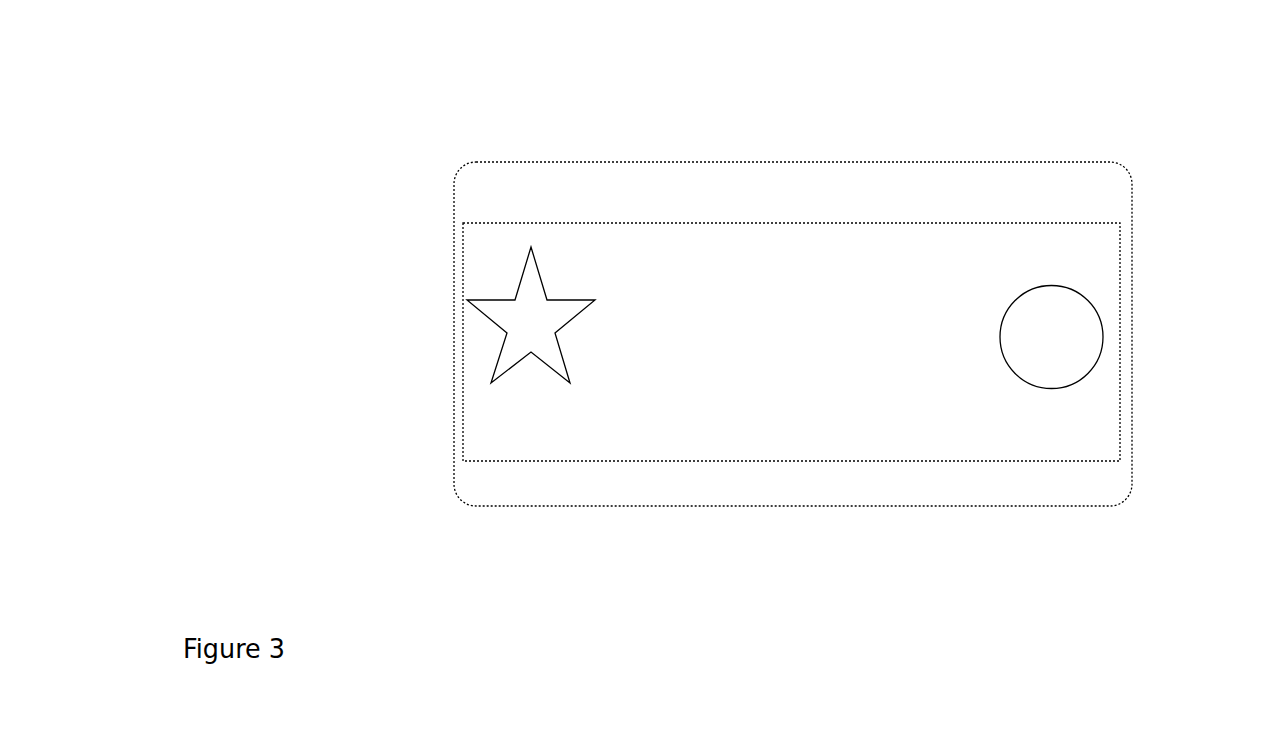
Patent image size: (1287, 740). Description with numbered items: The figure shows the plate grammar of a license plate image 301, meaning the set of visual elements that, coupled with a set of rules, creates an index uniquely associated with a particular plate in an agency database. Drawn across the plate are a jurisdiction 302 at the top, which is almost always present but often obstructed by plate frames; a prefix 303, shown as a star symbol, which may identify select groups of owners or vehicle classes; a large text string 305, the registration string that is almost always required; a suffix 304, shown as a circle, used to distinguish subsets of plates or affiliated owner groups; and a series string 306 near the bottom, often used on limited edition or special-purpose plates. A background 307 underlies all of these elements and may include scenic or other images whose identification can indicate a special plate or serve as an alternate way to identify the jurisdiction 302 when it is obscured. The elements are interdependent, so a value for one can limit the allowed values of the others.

The license plate image 301 is at (795, 570).
The jurisdiction 302 is at (675, 188).
The prefix 303 is at (472, 344).
The suffix 304 is at (1117, 335).
The text string 305 is at (872, 371).
The series string 306 is at (723, 451).
The background 307 is at (1010, 242).